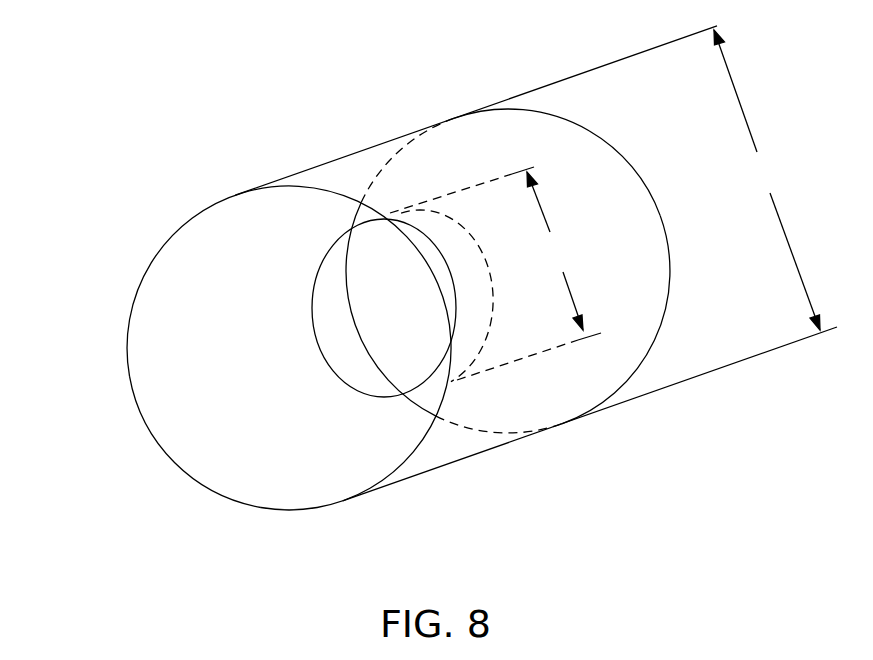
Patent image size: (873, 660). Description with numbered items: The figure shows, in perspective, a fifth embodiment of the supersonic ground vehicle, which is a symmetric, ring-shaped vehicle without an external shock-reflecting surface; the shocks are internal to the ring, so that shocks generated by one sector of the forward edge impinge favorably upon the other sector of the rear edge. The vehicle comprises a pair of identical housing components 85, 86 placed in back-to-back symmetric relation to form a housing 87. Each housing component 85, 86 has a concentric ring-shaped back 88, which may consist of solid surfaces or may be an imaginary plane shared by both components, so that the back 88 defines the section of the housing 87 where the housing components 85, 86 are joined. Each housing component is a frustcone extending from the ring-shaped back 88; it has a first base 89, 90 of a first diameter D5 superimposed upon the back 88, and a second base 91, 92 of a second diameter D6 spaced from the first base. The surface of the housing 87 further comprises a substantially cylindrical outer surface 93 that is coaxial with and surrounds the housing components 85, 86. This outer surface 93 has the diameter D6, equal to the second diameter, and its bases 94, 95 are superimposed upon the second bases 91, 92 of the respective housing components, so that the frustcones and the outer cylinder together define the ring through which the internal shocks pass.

The housing component 85 is at (210, 240).
The housing component 86 is at (583, 140).
The housing 87 is at (17, 445).
The ring-shaped back 88 is at (345, 378).
The first base 89 is at (287, 238).
The first base 90 is at (495, 314).
The second base 91 is at (197, 483).
The second base 92 is at (673, 260).
The cylindrical outer surface 93 is at (358, 162).
The base of outer surface 94 is at (280, 510).
The base of outer surface 95 is at (640, 167).
The first diameter D5 is at (555, 251).
The second diameter D6 is at (767, 180).